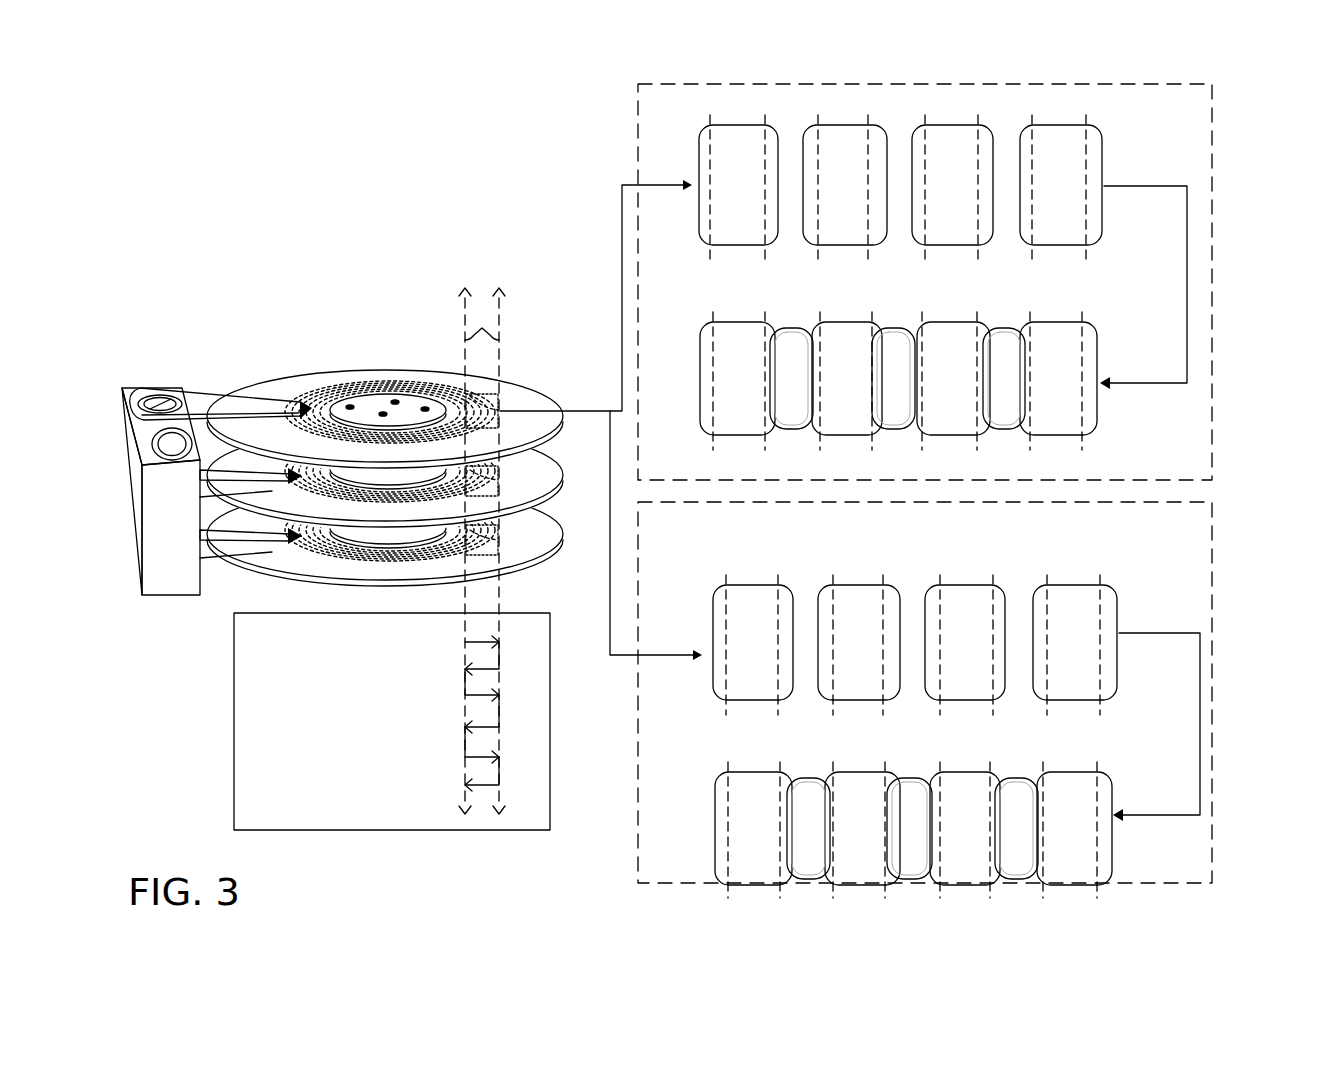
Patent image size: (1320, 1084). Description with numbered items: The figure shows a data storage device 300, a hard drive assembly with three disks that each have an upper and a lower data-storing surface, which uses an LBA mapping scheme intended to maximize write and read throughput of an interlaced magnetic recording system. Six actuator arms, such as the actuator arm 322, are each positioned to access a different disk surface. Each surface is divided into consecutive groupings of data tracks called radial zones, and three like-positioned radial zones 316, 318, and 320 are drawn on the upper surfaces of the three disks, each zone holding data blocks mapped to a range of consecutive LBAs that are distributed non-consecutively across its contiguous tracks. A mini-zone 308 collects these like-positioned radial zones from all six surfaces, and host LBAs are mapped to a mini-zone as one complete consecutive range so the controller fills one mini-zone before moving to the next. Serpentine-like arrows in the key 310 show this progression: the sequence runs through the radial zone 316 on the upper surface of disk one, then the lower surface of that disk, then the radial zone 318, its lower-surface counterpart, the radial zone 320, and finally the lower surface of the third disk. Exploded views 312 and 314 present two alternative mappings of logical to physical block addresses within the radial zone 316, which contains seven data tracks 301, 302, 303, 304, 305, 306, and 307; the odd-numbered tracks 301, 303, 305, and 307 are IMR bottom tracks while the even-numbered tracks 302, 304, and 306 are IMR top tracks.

The data storage device 300 is at (221, 252).
The data track 301 is at (746, 496).
The data track 302 is at (800, 486).
The data track 303 is at (851, 496).
The data track 304 is at (902, 486).
The data track 305 is at (958, 496).
The data track 306 is at (1010, 486).
The data track 307 is at (1068, 496).
The mini-zone 308 is at (482, 328).
The key 310 is at (234, 640).
The exploded view 312 is at (1212, 190).
The exploded view 314 is at (1212, 618).
The radial zone 316 is at (495, 398).
The radial zone 318 is at (500, 478).
The radial zone 320 is at (493, 543).
The actuator arm 322 is at (211, 405).